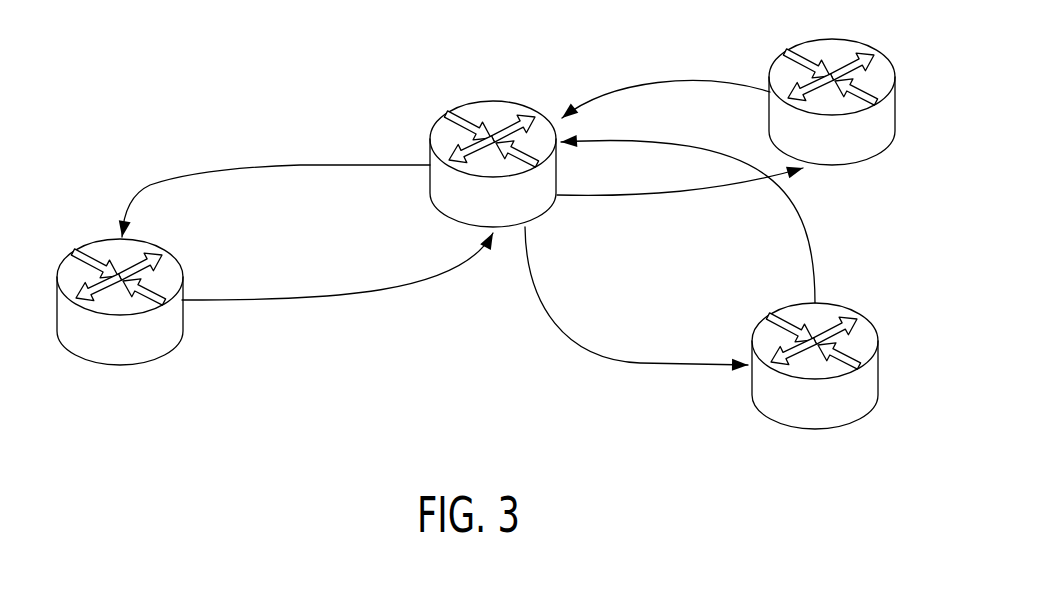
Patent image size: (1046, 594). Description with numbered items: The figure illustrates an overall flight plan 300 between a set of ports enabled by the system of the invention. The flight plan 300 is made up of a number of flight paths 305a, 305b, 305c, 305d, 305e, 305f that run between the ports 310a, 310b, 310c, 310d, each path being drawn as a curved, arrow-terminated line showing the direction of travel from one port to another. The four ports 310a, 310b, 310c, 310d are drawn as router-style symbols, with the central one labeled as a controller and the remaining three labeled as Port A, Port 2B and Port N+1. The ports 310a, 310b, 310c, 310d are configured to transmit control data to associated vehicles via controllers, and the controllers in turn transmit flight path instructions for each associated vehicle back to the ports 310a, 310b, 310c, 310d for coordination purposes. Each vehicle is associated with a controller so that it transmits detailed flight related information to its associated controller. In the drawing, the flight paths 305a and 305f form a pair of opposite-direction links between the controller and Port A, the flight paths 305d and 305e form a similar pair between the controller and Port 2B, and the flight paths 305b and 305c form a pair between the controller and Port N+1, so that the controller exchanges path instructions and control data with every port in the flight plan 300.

The flight plan 300 is at (214, 89).
The flight path 305a is at (332, 300).
The flight path 305b is at (630, 362).
The flight path 305c is at (808, 244).
The flight path 305d is at (696, 194).
The flight path 305e is at (652, 82).
The flight path 305f is at (271, 163).
The port 310a is at (168, 353).
The port 310b is at (438, 208).
The port 310c is at (888, 143).
The port 310d is at (868, 408).